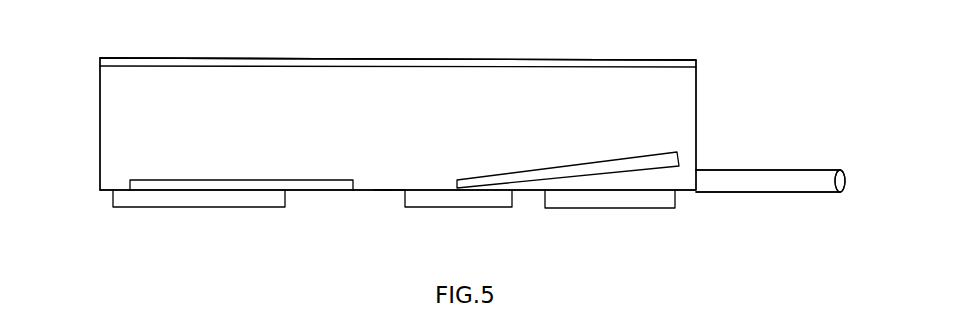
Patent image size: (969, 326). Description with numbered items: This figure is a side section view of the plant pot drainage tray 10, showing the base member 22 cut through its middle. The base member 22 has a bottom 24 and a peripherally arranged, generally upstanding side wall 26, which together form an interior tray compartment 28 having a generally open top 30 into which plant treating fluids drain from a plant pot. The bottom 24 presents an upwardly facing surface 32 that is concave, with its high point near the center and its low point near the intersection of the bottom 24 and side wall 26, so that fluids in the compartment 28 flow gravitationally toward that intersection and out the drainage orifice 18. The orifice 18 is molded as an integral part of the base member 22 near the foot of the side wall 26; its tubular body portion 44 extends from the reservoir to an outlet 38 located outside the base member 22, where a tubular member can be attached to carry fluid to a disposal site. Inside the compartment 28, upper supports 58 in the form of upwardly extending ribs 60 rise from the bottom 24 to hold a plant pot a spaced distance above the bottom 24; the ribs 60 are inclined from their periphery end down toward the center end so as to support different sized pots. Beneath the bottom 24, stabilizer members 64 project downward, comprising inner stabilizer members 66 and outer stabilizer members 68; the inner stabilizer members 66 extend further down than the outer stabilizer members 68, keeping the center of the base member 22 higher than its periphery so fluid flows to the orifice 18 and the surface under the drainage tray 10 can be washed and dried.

The drainage tray 10 is at (716, 93).
The drainage orifice 18 is at (786, 160).
The base member 22 is at (161, 49).
The bottom 24 is at (400, 212).
The side wall 26 is at (100, 82).
The interior tray compartment 28 is at (320, 86).
The open top 30 is at (264, 41).
The upwardly facing surface 32 is at (380, 189).
The outlet 38 is at (846, 178).
The tubular body portion 44 is at (752, 185).
The upper supports 58 is at (135, 172).
The ribs 60 is at (563, 163).
The stabilizer members 64 is at (229, 212).
The inner stabilizer members 66 is at (463, 200).
The outer stabilizer members 68 is at (655, 200).